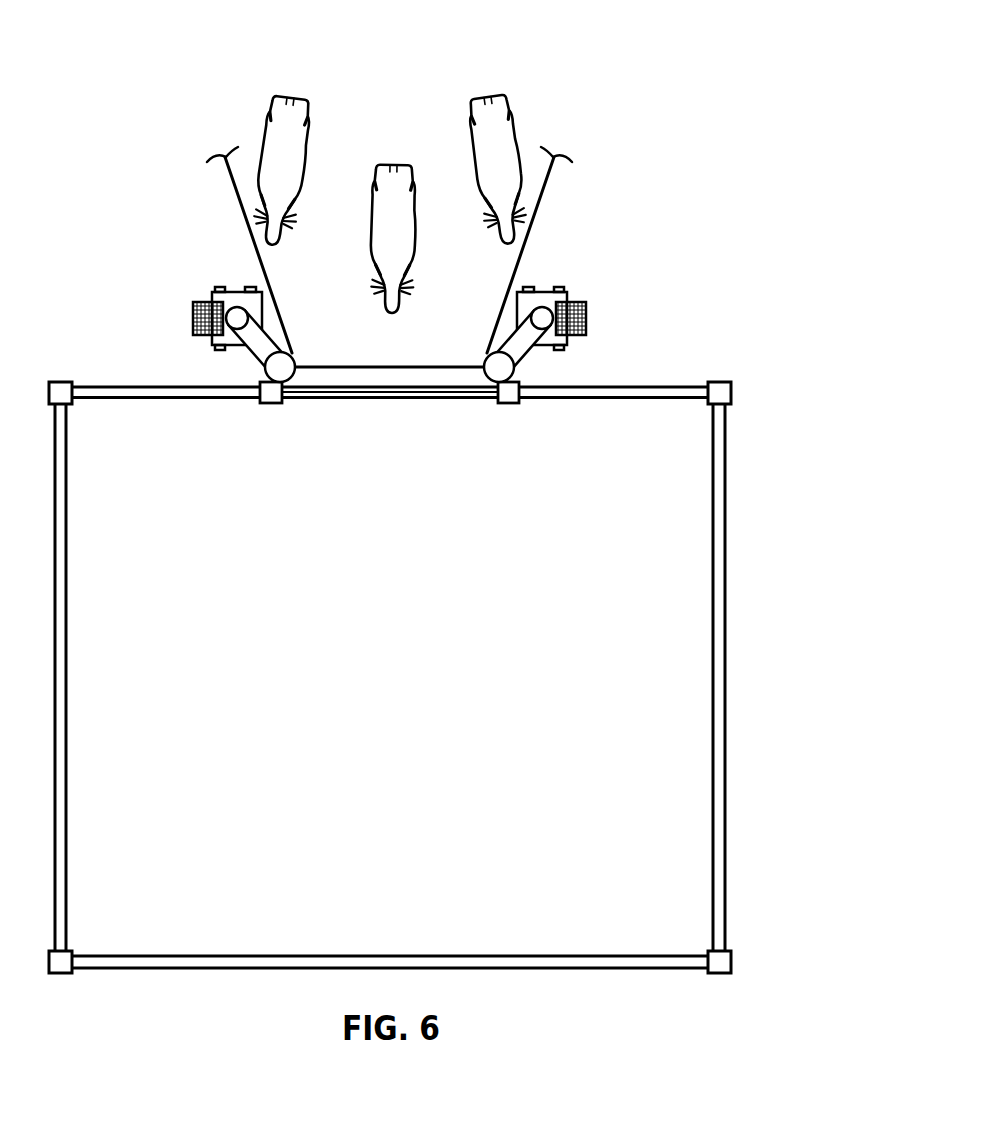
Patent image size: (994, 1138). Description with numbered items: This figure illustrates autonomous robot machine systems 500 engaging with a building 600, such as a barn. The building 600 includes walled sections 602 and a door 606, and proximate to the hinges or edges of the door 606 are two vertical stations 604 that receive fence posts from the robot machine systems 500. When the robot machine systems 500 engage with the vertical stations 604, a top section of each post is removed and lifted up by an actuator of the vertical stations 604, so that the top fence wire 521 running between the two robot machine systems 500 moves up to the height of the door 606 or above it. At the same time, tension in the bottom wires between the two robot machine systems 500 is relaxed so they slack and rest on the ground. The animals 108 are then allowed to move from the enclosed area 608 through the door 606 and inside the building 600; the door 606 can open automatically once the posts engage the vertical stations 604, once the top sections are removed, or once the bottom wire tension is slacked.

The animals 108 is at (277, 97).
The autonomous robot machine systems 500 is at (178, 306).
The top fence wire 521 is at (232, 187).
The building 600 is at (482, 677).
The walled sections 602 is at (725, 620).
The vertical stations 604 is at (270, 405).
The door 606 is at (348, 399).
The enclosed area 608 is at (508, 230).